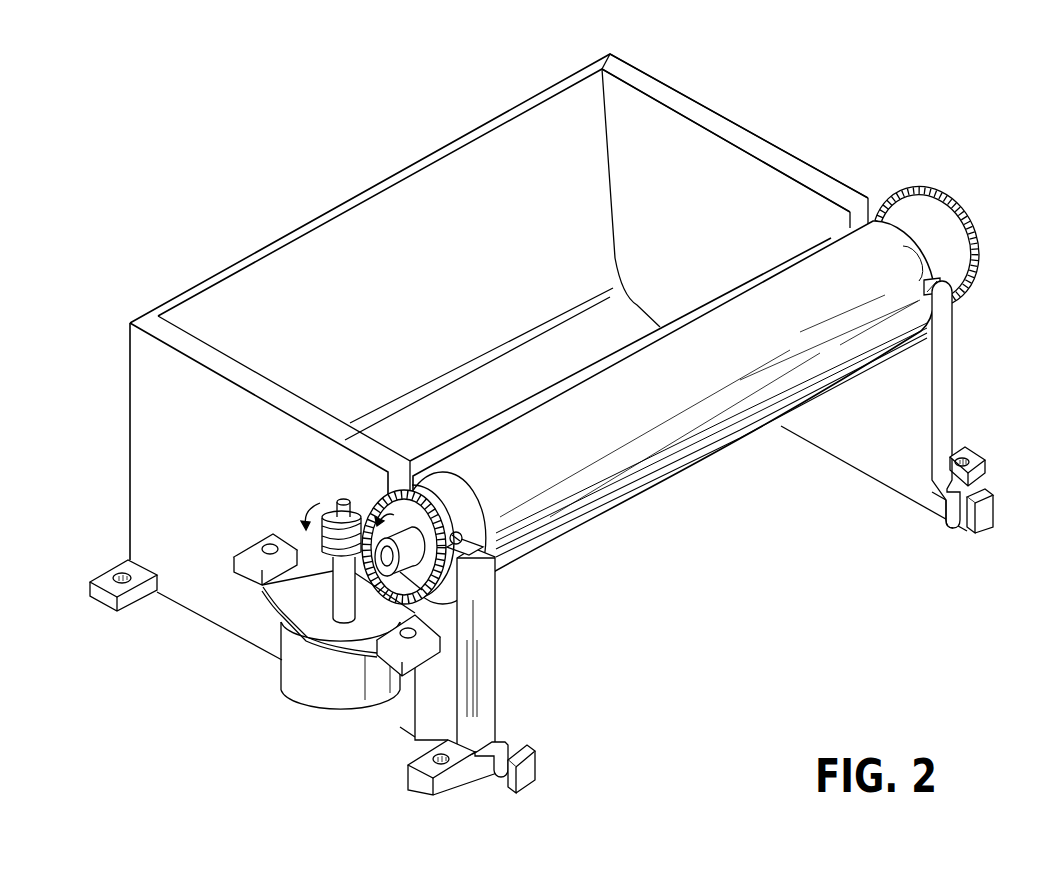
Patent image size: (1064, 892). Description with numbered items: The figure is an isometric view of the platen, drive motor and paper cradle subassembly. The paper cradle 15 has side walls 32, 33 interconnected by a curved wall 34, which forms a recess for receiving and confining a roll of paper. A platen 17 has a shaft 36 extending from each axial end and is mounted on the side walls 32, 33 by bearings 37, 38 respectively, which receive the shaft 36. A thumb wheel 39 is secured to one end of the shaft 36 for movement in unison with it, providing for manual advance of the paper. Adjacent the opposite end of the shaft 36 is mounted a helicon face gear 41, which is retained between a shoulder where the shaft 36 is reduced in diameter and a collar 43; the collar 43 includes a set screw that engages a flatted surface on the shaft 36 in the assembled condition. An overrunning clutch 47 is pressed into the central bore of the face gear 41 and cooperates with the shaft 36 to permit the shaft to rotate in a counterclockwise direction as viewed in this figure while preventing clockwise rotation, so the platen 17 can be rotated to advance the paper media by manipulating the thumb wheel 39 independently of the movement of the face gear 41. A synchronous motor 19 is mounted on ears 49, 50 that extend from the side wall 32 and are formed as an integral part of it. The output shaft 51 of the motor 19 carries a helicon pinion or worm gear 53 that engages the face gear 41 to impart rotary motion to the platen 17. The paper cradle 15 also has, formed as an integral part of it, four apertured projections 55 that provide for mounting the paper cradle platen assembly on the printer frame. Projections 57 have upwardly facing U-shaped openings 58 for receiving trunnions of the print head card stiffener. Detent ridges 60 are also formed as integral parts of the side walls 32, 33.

The paper cradle 15 is at (385, 173).
The platen 17 is at (661, 384).
The synchronous motor 19 is at (312, 687).
The side wall 32 is at (190, 350).
The side wall 33 is at (816, 164).
The curved wall 34 is at (416, 296).
The shaft 36 is at (392, 558).
The bearing 37 is at (468, 540).
The bearing 38 is at (917, 282).
The thumb wheel 39 is at (944, 210).
The helicon face gear 41 is at (447, 573).
The collar 43 is at (422, 592).
The overrunning clutch 47 is at (440, 588).
The ear 49 is at (255, 548).
The ear 50 is at (427, 657).
The output shaft 51 is at (333, 594).
The helicon pinion or worm gear 53 is at (358, 507).
The apertured projection 55 is at (141, 597).
The projection 57 is at (536, 763).
The U shaped opening 58 is at (497, 766).
The detent ridge 60 is at (953, 312).